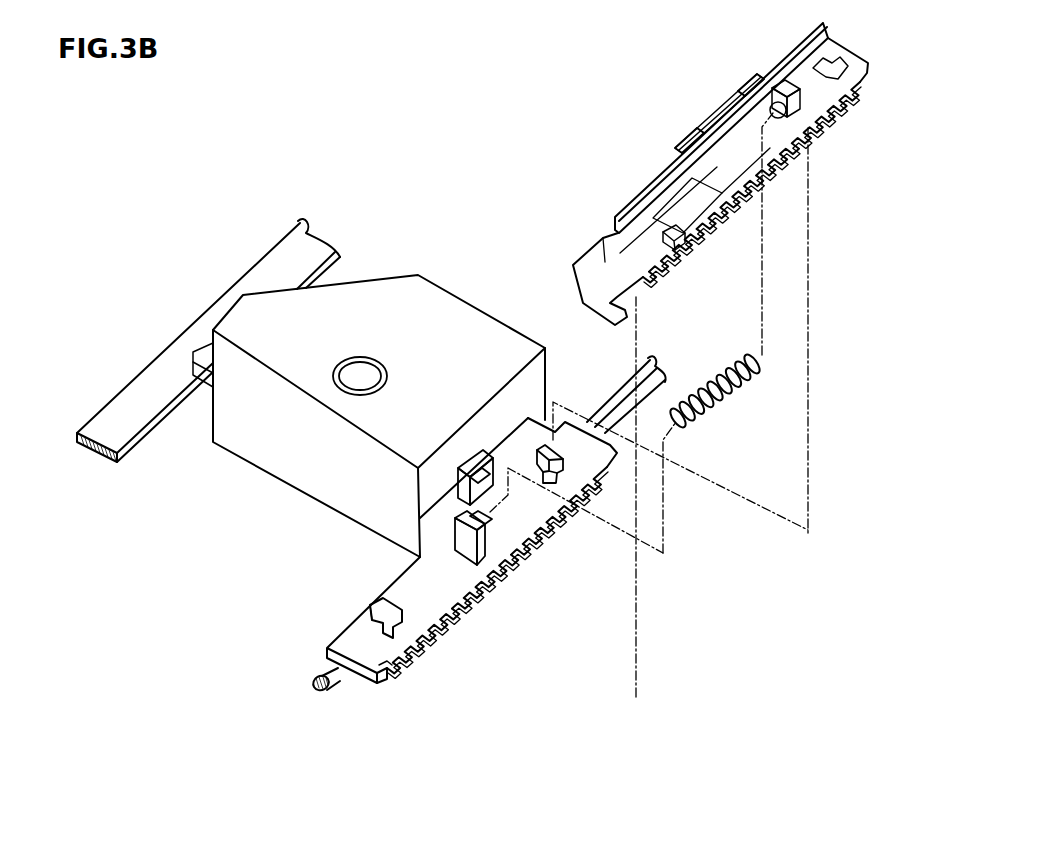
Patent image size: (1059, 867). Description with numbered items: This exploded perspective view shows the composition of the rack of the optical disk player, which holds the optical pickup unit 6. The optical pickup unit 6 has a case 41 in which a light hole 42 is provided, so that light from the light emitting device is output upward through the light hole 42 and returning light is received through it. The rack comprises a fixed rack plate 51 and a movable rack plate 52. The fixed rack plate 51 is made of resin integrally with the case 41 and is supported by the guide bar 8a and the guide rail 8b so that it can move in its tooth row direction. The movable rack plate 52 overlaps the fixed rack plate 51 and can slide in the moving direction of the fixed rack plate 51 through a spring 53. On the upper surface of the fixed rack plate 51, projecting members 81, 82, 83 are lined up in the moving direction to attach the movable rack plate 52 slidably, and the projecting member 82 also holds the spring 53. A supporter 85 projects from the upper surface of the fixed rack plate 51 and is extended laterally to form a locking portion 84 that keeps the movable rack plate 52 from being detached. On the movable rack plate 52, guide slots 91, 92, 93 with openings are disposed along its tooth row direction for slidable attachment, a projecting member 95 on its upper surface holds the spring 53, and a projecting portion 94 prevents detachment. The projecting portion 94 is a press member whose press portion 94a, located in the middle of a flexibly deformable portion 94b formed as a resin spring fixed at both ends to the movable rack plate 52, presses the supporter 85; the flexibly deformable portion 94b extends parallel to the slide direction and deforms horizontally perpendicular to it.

The optical pickup unit 6 is at (377, 268).
The guide bar 8a is at (618, 407).
The guide rail 8b is at (278, 266).
The case 41 is at (293, 462).
The light hole 42 is at (357, 378).
The fixed rack plate 51 is at (358, 642).
The movable rack plate 52 is at (704, 174).
The spring 53 is at (740, 388).
The projecting member 81 is at (389, 668).
The projecting member 82 is at (470, 550).
The projecting member 83 is at (548, 460).
The locking portion 84 is at (482, 463).
The supporter 85 is at (449, 434).
The guide slot 91 is at (680, 250).
The guide slot 92 is at (782, 165).
The guide slot 93 is at (850, 98).
The projecting portion 94 is at (653, 92).
The press portion 94a is at (708, 97).
The flexibly deformable portion 94b is at (745, 88).
The projecting member 95 is at (797, 78).